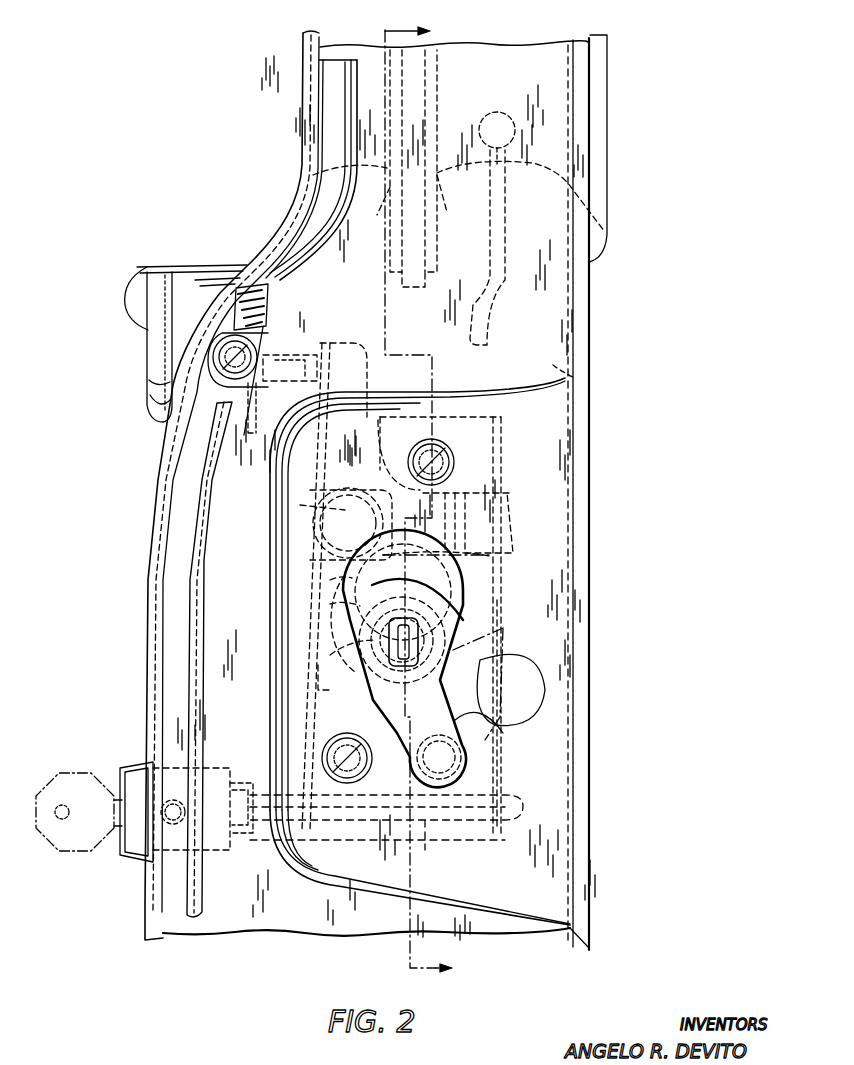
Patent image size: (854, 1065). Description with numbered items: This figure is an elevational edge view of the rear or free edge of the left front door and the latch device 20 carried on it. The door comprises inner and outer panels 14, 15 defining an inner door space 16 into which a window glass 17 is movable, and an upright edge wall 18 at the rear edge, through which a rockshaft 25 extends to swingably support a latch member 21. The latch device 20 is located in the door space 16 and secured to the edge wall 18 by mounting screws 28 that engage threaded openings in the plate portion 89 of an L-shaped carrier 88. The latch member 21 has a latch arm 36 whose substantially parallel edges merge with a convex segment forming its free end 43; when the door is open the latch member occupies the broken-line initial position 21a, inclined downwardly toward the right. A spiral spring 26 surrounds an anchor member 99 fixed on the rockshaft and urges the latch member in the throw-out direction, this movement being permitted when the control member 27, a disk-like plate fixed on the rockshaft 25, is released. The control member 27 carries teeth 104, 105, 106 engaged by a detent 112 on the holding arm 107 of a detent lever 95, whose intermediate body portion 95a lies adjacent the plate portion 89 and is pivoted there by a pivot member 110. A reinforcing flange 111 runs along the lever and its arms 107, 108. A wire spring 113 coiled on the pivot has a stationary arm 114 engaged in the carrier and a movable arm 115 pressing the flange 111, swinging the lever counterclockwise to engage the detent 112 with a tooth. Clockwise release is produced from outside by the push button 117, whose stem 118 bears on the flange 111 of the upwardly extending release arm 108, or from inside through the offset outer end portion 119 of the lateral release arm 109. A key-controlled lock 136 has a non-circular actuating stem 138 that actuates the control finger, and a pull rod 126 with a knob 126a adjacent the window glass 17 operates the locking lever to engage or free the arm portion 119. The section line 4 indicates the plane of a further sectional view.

The section line 4- 4 is at (426, 500).
The inner panel 14 is at (572, 318).
The outer panel 15 is at (160, 492).
The inner door space 16 is at (575, 364).
The window glass 17 is at (417, 75).
The edge wall 18 is at (560, 430).
The latch device 20 is at (505, 628).
The latch member 21 is at (395, 736).
The initial broken-line position 21a is at (543, 662).
The rockshaft 25 is at (392, 708).
The spiral spring 26 is at (452, 572).
The control member 27 is at (396, 580).
The mounting screws 28 is at (448, 462).
The latch arm 36 is at (457, 727).
The free end 43 is at (422, 768).
The carrier 88 is at (473, 417).
The plate portion 89 is at (490, 417).
The detent lever 95 is at (362, 445).
The intermediate body portion 95a is at (393, 450).
The anchor member 99 is at (390, 668).
The tooth 104 is at (330, 582).
The tooth 105 is at (330, 605).
The tooth 106 is at (330, 655).
The holding arm 107 is at (333, 628).
The release arm 108 is at (338, 343).
The release arm 109 is at (447, 485).
The pivot member 110 is at (378, 520).
The reinforcing flange 111 is at (300, 508).
The detent 112 is at (318, 685).
The wire spring 113 is at (348, 500).
The stationary arm 114 is at (497, 582).
The movable arm 115 is at (318, 378).
The push button 117 is at (150, 395).
The stem 118 is at (278, 378).
The offset outer end portion 119 is at (495, 492).
The pull rod 126 is at (505, 252).
The knob 126a is at (494, 116).
The key-controlled lock 136 is at (128, 858).
The actuating stem 138 is at (426, 835).